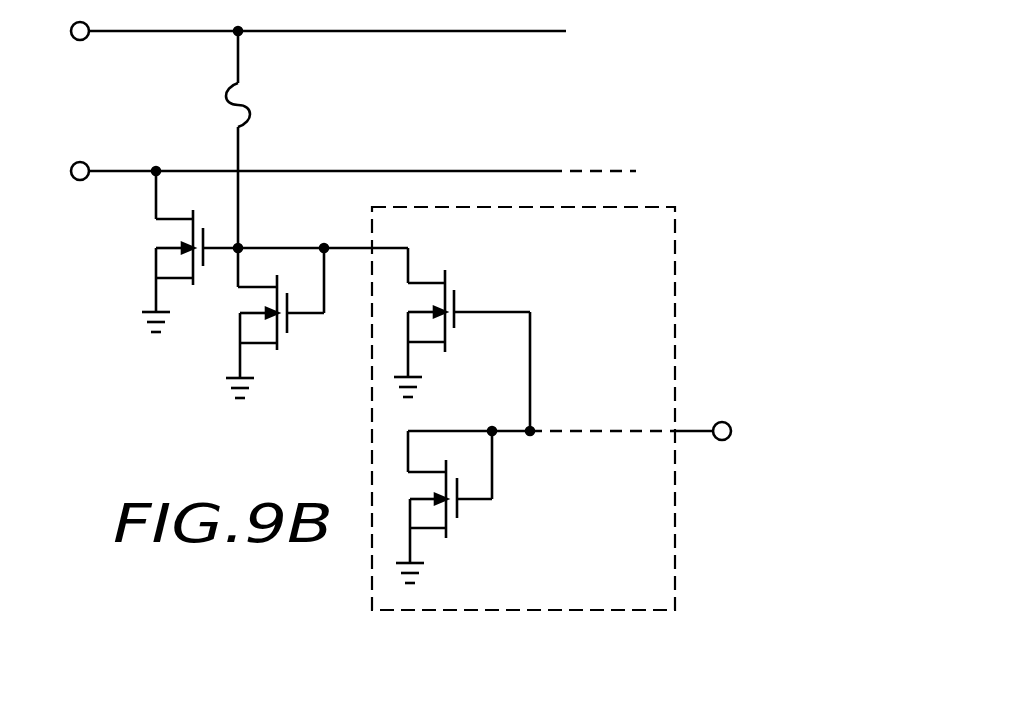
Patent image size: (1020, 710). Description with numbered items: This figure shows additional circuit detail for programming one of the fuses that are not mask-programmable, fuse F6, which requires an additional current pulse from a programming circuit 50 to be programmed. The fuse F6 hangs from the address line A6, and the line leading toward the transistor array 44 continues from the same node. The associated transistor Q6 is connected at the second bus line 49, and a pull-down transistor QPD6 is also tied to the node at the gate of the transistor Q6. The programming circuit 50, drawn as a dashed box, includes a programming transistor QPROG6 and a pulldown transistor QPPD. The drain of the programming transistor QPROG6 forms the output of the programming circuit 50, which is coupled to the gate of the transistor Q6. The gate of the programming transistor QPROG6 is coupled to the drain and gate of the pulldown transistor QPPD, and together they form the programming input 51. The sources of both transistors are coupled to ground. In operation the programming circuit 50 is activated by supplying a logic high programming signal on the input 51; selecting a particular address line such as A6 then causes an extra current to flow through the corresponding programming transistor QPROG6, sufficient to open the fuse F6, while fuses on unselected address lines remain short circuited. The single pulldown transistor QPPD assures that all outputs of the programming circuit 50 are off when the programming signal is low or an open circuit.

The transistor array 44 is at (700, 41).
The A/D line 49 is at (490, 170).
The programming circuit 50 is at (675, 298).
The input 51 is at (685, 430).
The fuse F6 is at (257, 139).
The transistor Q6 is at (258, 251).
The pull-down transistor QPD6 is at (289, 323).
The programming transistor QPROG6 is at (473, 336).
The pulldown transistor QPPD is at (465, 505).
The address line A6 is at (296, 32).